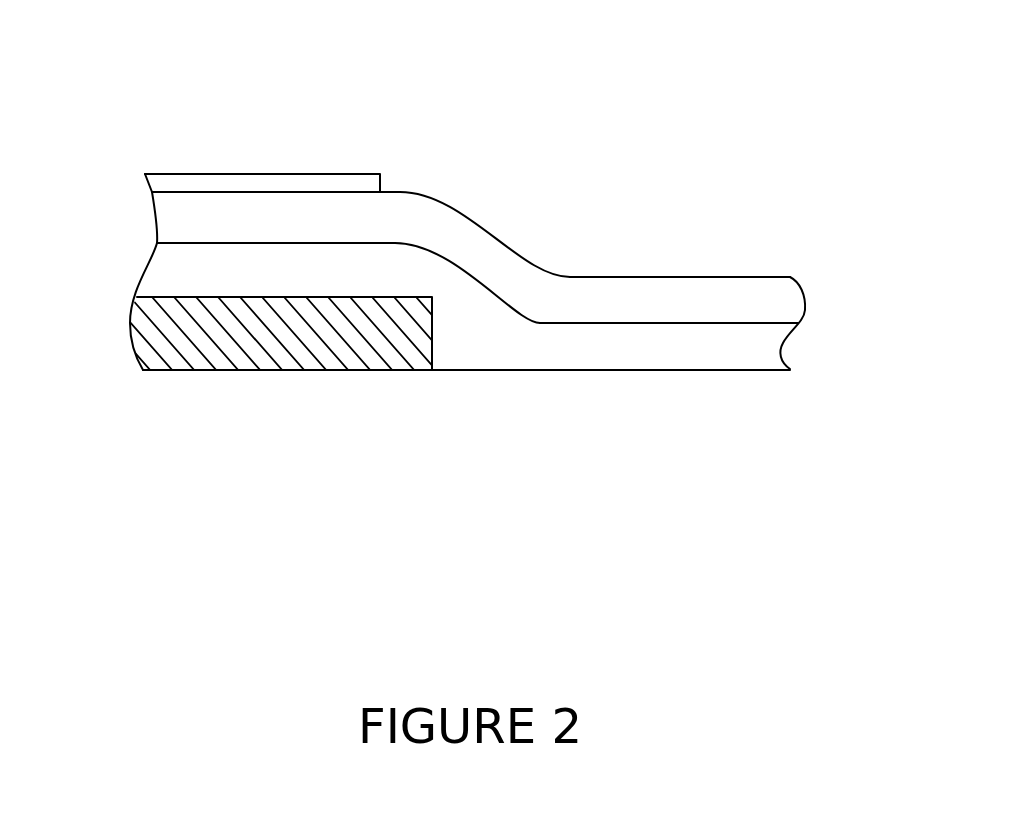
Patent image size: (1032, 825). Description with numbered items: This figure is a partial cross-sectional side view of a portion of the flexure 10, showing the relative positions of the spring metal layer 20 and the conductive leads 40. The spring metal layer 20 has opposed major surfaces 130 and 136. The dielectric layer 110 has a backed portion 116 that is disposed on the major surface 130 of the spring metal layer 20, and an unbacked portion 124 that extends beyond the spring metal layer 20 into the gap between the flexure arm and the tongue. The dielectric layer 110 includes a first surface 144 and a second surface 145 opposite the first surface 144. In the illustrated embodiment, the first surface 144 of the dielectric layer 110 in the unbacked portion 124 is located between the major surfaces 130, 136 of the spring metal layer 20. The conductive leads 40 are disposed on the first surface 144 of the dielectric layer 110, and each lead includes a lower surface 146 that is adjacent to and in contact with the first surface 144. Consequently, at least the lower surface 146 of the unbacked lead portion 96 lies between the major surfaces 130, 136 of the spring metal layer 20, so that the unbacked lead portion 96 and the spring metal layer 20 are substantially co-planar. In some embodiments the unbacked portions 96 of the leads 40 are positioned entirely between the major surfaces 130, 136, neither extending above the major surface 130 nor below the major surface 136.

The flexure 10 is at (220, 132).
The spring metal layer 20 is at (128, 315).
The conductive leads 40 is at (762, 272).
The unbacked lead portion 96 is at (693, 290).
The dielectric layer 110 is at (459, 364).
The backed portion of the dielectric layer 116 is at (292, 243).
The unbacked portion of the dielectric layer 124 is at (520, 369).
The major surface 130 is at (193, 297).
The major surface 136 is at (205, 372).
The first surface 144 is at (758, 323).
The second surface 145 is at (677, 369).
The lower surface 146 is at (575, 325).